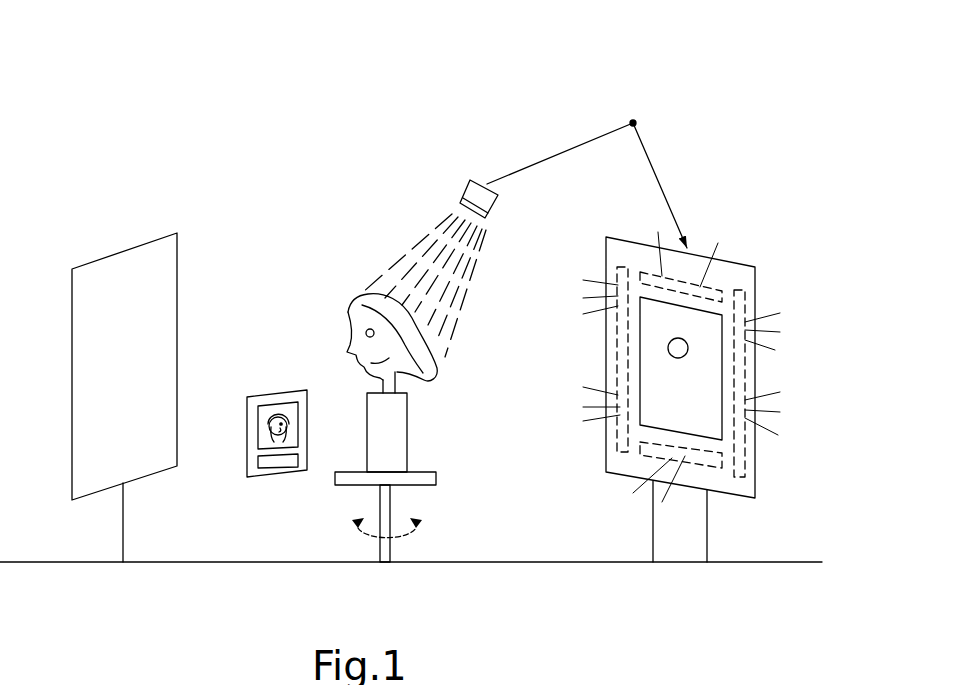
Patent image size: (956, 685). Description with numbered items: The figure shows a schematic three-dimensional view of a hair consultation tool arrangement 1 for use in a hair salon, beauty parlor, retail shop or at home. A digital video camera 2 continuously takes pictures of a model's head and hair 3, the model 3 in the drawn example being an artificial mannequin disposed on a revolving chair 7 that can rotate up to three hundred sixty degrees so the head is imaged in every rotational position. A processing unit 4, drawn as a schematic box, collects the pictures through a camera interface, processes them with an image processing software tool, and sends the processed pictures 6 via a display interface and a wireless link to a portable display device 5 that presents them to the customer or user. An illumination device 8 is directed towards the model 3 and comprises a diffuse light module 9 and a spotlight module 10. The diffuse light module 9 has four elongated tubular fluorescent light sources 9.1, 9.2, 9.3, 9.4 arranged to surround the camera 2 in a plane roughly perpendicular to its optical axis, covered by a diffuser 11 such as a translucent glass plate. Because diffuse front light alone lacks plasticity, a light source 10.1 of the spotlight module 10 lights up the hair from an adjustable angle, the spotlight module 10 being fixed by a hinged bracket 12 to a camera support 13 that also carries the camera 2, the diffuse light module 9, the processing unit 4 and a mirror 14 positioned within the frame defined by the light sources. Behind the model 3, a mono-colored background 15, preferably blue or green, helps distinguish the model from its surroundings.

The hair consultation tool arrangement 1 is at (465, 90).
The digital video camera 2 is at (688, 349).
The model's head and hair 3 is at (333, 323).
The processing unit 4 is at (695, 530).
The display device 5 is at (265, 393).
The processed pictures 6 is at (264, 425).
The revolving chair 7 is at (412, 503).
The illumination device 8 is at (545, 345).
The diffuse light module 9 is at (722, 277).
The light source 9.1 is at (738, 300).
The light source 9.2 is at (710, 462).
The light source 9.3 is at (612, 352).
The light source 9.4 is at (660, 278).
The spotlight module 10 is at (480, 178).
The light source 10.1 is at (477, 197).
The diffuser 11 is at (620, 467).
The hinged bracket 12 is at (587, 140).
The camera support 13 is at (718, 215).
The mirror 14 is at (735, 397).
The mono-colored background 15 is at (130, 267).